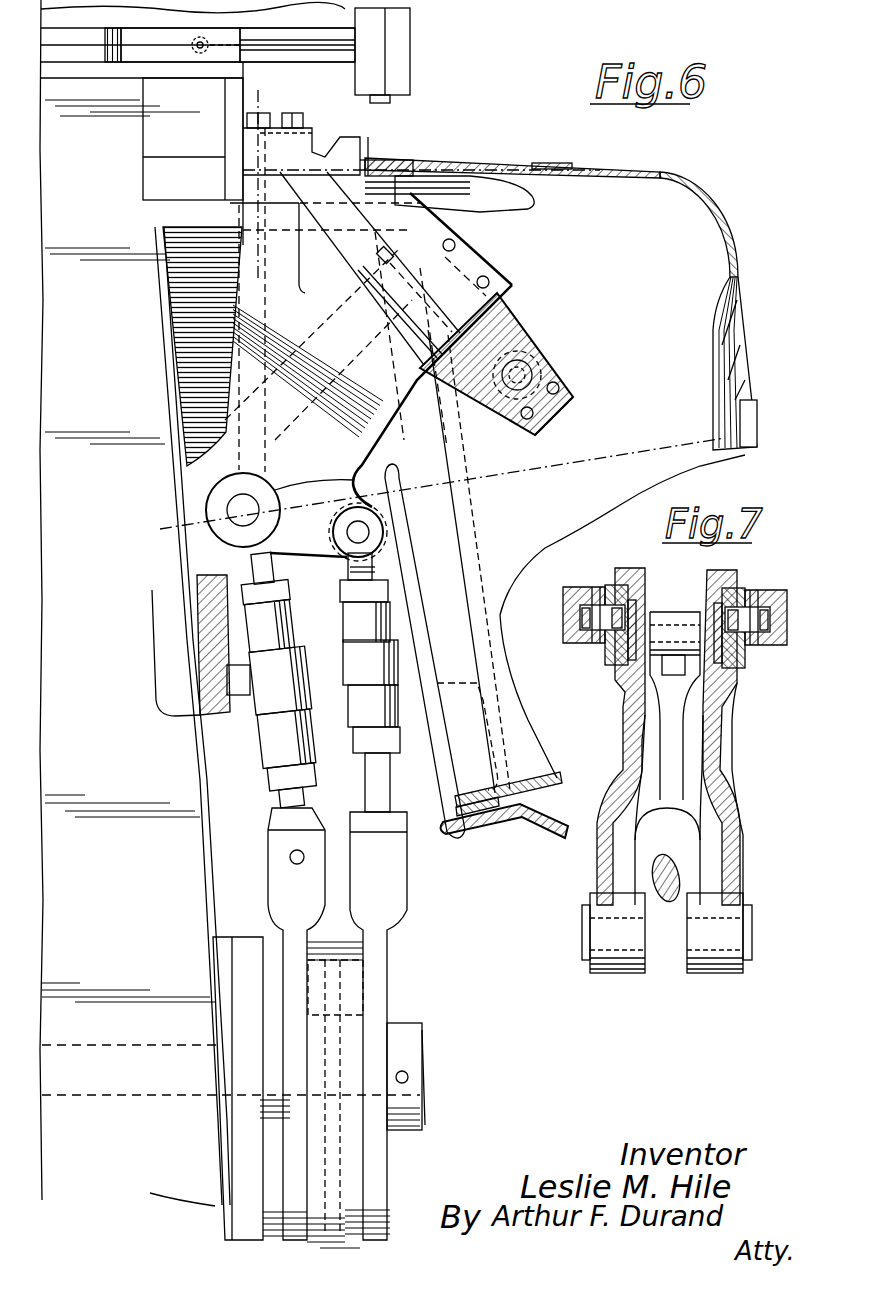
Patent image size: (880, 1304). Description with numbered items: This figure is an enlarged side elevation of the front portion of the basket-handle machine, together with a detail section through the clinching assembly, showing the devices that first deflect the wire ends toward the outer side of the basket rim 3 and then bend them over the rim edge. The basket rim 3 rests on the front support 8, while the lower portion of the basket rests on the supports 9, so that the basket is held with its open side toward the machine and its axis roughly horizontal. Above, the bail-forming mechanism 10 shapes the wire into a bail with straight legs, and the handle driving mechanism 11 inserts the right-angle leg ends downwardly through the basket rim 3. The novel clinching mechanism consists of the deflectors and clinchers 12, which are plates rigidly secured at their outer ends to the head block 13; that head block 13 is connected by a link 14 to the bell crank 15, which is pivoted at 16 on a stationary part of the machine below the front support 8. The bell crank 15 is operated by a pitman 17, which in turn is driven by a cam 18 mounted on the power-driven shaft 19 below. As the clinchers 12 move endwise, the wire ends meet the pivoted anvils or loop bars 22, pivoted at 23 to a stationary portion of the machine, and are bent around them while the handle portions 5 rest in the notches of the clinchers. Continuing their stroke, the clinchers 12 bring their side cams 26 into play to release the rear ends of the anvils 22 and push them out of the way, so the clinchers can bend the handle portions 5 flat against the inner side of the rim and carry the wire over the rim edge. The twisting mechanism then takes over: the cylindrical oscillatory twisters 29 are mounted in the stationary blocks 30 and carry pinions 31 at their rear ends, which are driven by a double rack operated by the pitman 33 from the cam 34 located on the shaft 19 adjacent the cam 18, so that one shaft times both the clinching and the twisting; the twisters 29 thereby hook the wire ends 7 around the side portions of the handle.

In FIG. 6, the basket rim 3 is at (400, 164).
In FIG. 6, the handle portion 5 is at (268, 88).
In FIG. 6, the wire end 7 is at (140, 513).
In FIG. 6, the front support 8 is at (512, 170).
In FIG. 6, the support 9 is at (462, 836).
In FIG. 6, the bail-forming mechanism 10 is at (225, 58).
In FIG. 6, the handle driving mechanism 11 is at (412, 46).
In FIG. 6, the deflector and clincher 12 is at (525, 352).
In FIG. 7, the deflector and clincher 12 is at (622, 660).
In FIG. 6, the head block 13 is at (543, 418).
In FIG. 6, the link 14 is at (505, 345).
In FIG. 7, the link 14 is at (674, 614).
In FIG. 6, the bell crank 15 is at (437, 430).
In FIG. 7, the bell crank 15 is at (668, 737).
In FIG. 6, the pivot 16 is at (370, 497).
In FIG. 7, the pivot 16 is at (584, 922).
In FIG. 6, the pitman 17 is at (383, 782).
In FIG. 6, the cam 18 is at (352, 1006).
In FIG. 6, the shaft 19 is at (426, 1062).
In FIG. 6, the anvil or loop bar 22 is at (420, 183).
In FIG. 7, the anvil or loop bar 22 is at (563, 612).
In FIG. 6, the pivot 23 is at (385, 257).
In FIG. 7, the pivot 23 is at (597, 592).
In FIG. 7, the cam 26 is at (630, 640).
In FIG. 6, the twister 29 is at (325, 142).
In FIG. 6, the stationary block 30 is at (355, 162).
In FIG. 6, the pinion 31 is at (248, 133).
In FIG. 6, the pitman 33 is at (262, 310).
In FIG. 7, the pitman 33 is at (660, 876).
In FIG. 6, the cam 34 is at (312, 992).